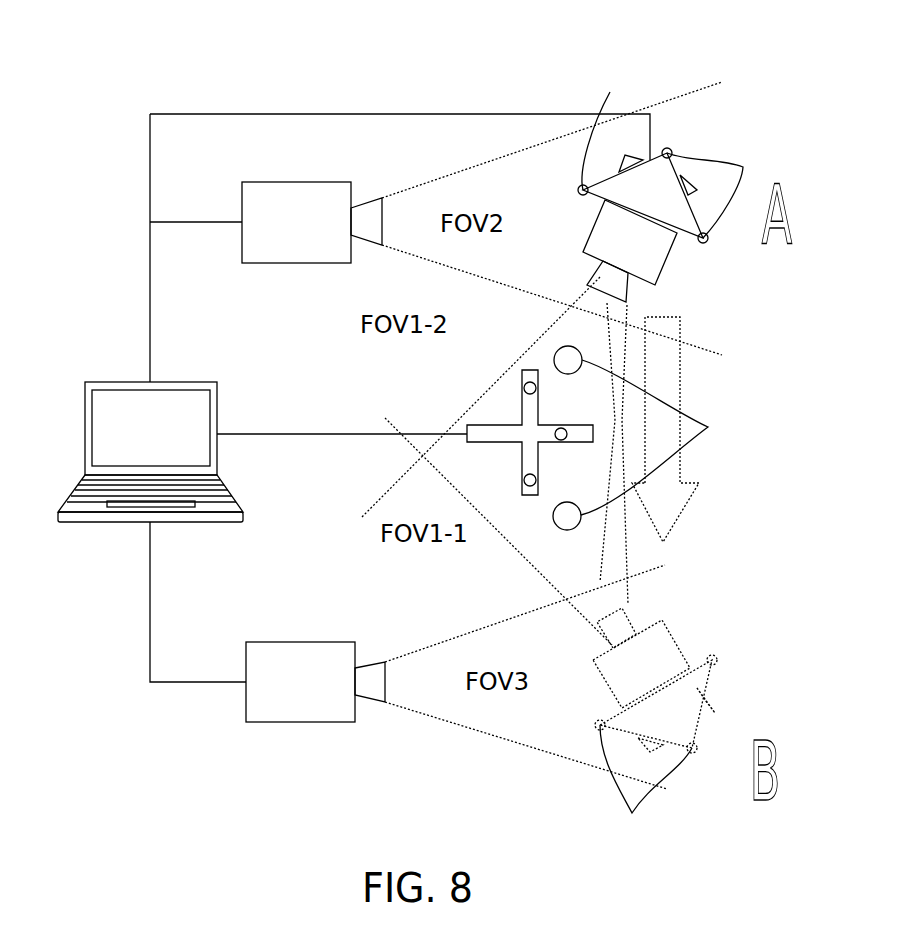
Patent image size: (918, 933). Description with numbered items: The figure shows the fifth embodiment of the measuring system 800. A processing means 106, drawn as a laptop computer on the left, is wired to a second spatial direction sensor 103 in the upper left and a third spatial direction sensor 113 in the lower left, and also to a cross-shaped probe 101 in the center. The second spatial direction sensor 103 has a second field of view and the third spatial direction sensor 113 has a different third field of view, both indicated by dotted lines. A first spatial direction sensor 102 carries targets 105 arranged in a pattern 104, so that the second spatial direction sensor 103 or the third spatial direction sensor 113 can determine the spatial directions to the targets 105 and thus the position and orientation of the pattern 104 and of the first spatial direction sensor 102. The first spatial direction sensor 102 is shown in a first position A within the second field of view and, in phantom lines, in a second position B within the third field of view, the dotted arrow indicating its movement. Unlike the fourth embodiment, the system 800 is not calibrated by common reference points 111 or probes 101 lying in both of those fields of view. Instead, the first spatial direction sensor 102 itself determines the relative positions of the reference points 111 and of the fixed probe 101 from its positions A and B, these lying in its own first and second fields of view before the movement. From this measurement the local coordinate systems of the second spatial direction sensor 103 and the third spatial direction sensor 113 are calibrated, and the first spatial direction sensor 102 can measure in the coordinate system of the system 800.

The system 800 is at (228, 30).
The probe 101 is at (502, 423).
The first spatial direction sensor 102 is at (640, 262).
The second spatial direction sensor 103 is at (297, 243).
The pattern 104 is at (660, 210).
The targets 105 is at (757, 675).
The processing means 106 is at (195, 421).
The reference points 111 is at (708, 427).
The third spatial direction sensor 113 is at (297, 642).